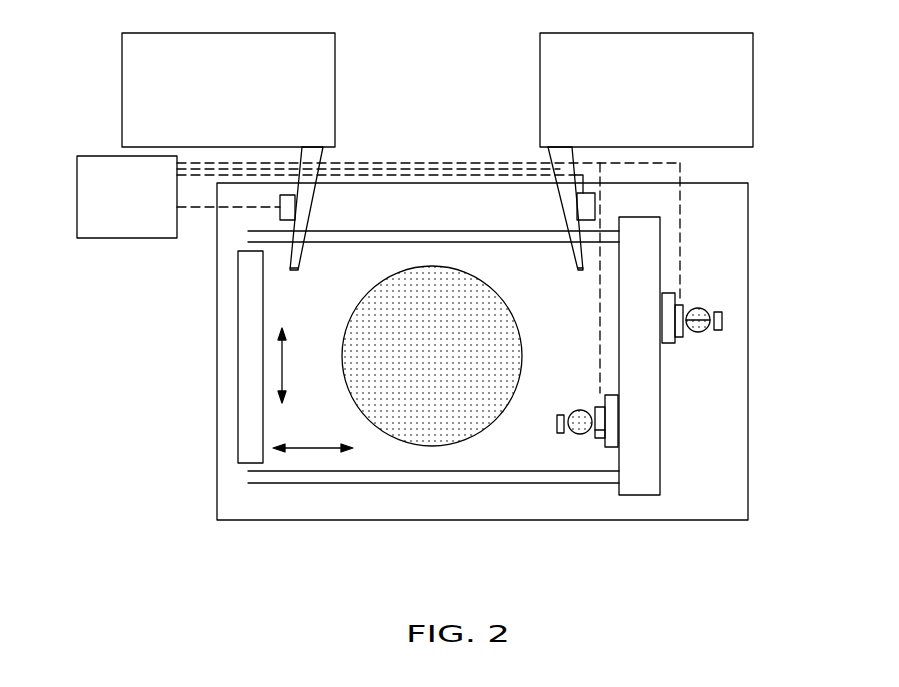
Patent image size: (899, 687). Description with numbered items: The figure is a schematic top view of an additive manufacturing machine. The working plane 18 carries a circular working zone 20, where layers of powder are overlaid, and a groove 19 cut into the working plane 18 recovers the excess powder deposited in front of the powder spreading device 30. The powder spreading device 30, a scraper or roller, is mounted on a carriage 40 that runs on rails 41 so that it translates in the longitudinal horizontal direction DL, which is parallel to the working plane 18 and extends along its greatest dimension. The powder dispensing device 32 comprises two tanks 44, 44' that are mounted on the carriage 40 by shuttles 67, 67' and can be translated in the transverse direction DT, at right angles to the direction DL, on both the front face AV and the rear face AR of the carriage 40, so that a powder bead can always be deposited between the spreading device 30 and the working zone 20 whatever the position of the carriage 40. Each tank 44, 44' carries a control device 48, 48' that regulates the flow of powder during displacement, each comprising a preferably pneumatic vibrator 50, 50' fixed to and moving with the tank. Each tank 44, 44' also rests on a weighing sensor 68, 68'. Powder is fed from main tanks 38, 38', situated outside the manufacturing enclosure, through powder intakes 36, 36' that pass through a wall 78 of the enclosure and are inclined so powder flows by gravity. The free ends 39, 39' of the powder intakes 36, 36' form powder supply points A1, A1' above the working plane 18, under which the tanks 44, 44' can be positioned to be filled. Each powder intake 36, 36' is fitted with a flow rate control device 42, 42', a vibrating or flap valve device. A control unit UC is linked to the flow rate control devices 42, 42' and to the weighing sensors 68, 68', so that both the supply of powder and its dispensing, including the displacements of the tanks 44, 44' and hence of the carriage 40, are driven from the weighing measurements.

The working plane 18 is at (345, 457).
The groove 19 is at (246, 375).
The working zone 20 is at (422, 440).
The powder spreading device 30 is at (637, 497).
The powder dispensing device 32 is at (574, 455).
The powder intake 36 is at (531, 208).
The powder intake 36' is at (348, 208).
The main tank 38 is at (691, 90).
The main tank 38' is at (183, 90).
The free end 39 is at (536, 270).
The free end 39' is at (227, 284).
The carriage 40 is at (648, 252).
The rails 41 is at (435, 232).
The flow rate control device 42 is at (662, 188).
The flow rate control device 42' is at (220, 235).
The tank 44 is at (590, 384).
The tank 44' is at (770, 351).
The control device 48 is at (546, 491).
The control device 48' is at (760, 310).
The vibrator 50 is at (545, 383).
The vibrator 50' is at (761, 334).
The shuttle 67 is at (704, 432).
The shuttle 67' is at (742, 357).
The weighing sensor 68 is at (696, 473).
The weighing sensor 68' is at (738, 298).
The wall 78 is at (448, 182).
The control unit UC is at (127, 197).
The rear face AR is at (668, 221).
The front face AV is at (610, 464).
The transverse direction DT is at (300, 365).
The longitudinal horizontal direction DL is at (313, 435).
The powder supply point A1 is at (578, 290).
The powder supply point A1' is at (295, 290).